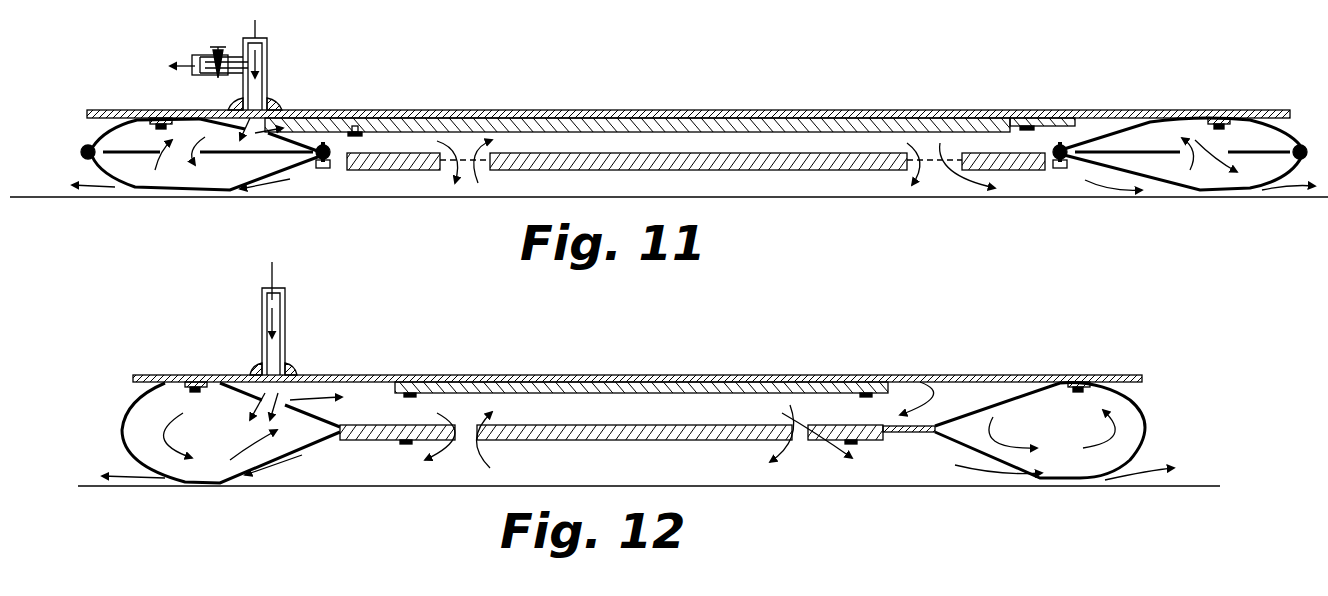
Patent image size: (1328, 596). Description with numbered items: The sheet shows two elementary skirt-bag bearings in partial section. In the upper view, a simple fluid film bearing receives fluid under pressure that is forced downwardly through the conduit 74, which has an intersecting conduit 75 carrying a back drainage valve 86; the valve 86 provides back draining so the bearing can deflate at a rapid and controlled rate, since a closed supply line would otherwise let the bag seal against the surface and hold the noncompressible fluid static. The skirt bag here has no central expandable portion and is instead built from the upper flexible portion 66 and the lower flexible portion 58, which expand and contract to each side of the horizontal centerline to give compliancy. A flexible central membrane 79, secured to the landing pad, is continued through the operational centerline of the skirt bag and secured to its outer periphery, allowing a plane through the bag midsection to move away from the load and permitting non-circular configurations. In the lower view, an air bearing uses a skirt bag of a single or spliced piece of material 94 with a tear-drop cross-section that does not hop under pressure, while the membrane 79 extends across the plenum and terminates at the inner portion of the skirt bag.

In FIG. 11, the lower flexible portion 58 is at (220, 170).
In FIG. 11, the upper flexible portion 66 is at (290, 128).
In FIG. 11, the conduit 74 is at (268, 70).
In FIG. 12, the conduit 74 is at (285, 345).
In FIG. 11, the intersecting conduit 75 is at (230, 77).
In FIG. 11, the central membrane 79 is at (757, 130).
In FIG. 12, the central membrane 79 is at (625, 426).
In FIG. 11, the back drainage valve 86 is at (205, 50).
In FIG. 12, the spliced material 94 is at (122, 437).